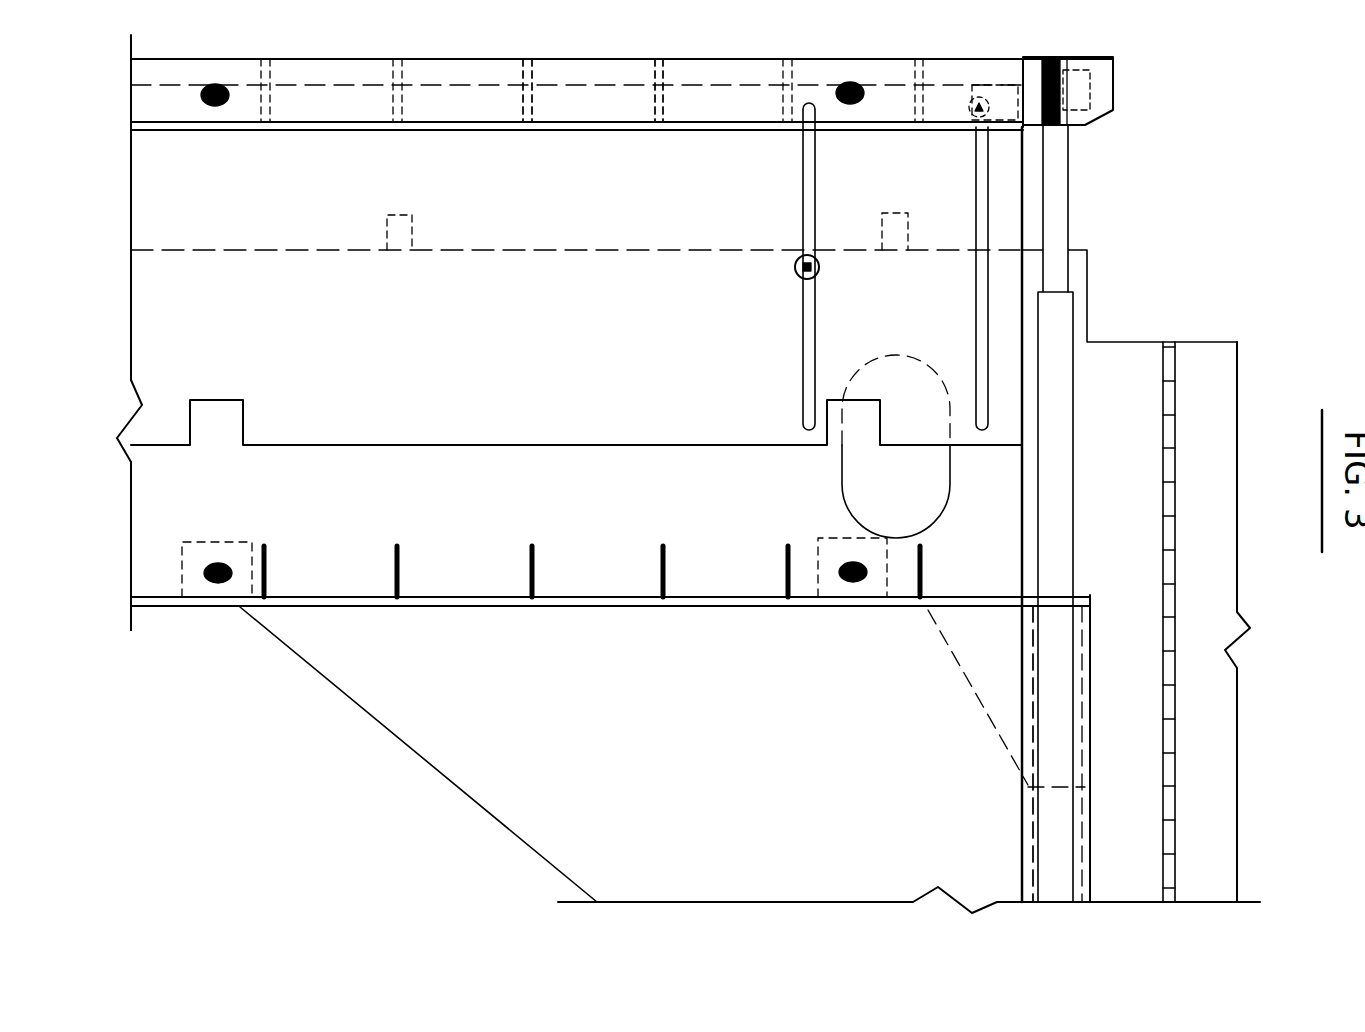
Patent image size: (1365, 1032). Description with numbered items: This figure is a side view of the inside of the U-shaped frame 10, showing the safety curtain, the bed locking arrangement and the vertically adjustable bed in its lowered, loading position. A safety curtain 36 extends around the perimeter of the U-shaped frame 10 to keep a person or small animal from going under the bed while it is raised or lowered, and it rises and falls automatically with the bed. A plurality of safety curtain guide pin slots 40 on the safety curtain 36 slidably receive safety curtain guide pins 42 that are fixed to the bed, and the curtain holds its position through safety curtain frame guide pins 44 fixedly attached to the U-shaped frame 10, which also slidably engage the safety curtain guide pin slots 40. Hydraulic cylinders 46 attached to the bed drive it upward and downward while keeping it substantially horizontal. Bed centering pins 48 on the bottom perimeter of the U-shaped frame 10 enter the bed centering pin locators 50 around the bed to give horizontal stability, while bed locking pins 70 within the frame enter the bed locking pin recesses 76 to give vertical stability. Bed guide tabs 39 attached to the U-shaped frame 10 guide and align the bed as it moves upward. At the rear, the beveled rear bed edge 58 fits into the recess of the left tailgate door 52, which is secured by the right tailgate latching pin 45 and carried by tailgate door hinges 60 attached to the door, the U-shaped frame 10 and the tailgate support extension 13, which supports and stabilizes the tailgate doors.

The U-shaped frame 10 is at (128, 523).
The tailgate support extension 13 is at (495, 843).
The safety curtain 36 is at (128, 183).
The bed guide tabs 39 is at (403, 201).
The safety curtain guide pin slots 40 is at (956, 350).
The safety curtain guide pins 42 is at (988, 83).
The safety curtain frame guide pins 44 is at (783, 275).
The right tailgate latching pin 45 is at (1095, 95).
The hydraulic cylinders 46 is at (1020, 864).
The bed centering pins 48 is at (663, 531).
The bed centering pin locators 50 is at (667, 140).
The left tailgate door 52 is at (1244, 344).
The rear bed edge 58 is at (1107, 115).
The tailgate door hinges 60 is at (1162, 870).
The bed locking pins 70 is at (244, 531).
The bed locking pin recesses 76 is at (226, 72).